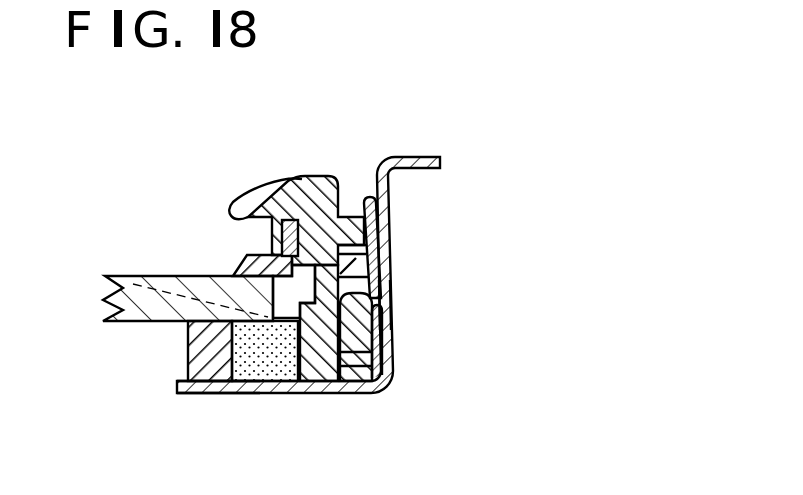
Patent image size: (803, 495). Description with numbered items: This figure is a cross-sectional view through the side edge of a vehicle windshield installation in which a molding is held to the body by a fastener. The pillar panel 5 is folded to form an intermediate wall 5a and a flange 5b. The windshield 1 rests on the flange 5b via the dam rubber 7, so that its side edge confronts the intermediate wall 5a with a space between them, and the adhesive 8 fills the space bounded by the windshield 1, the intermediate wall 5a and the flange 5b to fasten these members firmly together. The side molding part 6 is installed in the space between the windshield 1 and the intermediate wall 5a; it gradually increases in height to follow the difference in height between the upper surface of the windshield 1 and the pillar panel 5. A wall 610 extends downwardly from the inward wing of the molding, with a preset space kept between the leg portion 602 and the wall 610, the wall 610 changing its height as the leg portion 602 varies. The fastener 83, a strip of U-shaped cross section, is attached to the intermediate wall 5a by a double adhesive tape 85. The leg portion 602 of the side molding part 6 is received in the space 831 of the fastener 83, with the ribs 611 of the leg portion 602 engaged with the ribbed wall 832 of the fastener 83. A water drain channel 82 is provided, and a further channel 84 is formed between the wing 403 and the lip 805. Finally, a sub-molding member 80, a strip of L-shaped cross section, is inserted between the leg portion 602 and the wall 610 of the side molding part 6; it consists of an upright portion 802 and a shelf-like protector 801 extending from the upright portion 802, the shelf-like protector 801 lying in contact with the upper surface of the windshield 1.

The windshield 1 is at (138, 310).
The pillar panel 5 is at (428, 157).
The intermediate wall 5a is at (391, 290).
The flange 5b is at (195, 392).
The side molding part 6 is at (297, 158).
The dam rubber 7 is at (197, 356).
The adhesive 8 is at (245, 380).
The sub-molding member 80 is at (290, 214).
The water drain channel 82 is at (250, 245).
The fastener 83 is at (392, 357).
The channel 84 is at (355, 184).
The double adhesive tape 85 is at (376, 318).
The wing 403 is at (287, 210).
The leg portion 602 is at (332, 269).
The wall 610 is at (268, 240).
The ribs 611 is at (321, 382).
The shelf-like protector 801 is at (243, 265).
The upright portion 802 is at (343, 251).
The lip 805 is at (370, 221).
The space 831 is at (358, 382).
The ribbed wall 832 is at (298, 373).